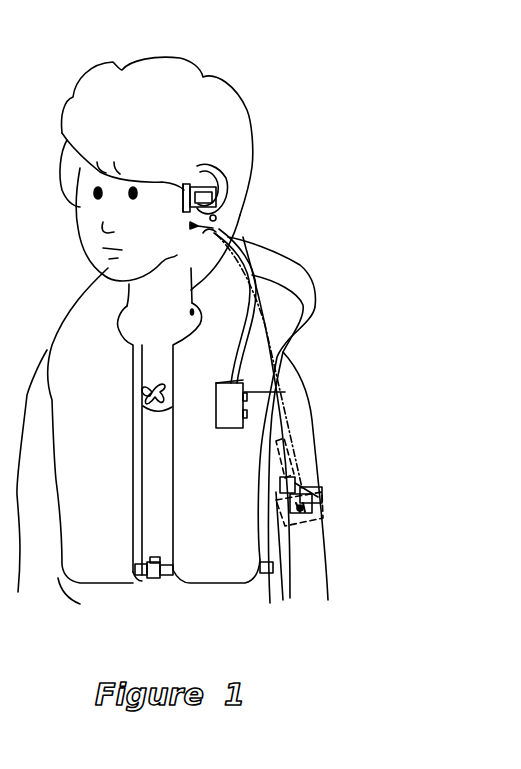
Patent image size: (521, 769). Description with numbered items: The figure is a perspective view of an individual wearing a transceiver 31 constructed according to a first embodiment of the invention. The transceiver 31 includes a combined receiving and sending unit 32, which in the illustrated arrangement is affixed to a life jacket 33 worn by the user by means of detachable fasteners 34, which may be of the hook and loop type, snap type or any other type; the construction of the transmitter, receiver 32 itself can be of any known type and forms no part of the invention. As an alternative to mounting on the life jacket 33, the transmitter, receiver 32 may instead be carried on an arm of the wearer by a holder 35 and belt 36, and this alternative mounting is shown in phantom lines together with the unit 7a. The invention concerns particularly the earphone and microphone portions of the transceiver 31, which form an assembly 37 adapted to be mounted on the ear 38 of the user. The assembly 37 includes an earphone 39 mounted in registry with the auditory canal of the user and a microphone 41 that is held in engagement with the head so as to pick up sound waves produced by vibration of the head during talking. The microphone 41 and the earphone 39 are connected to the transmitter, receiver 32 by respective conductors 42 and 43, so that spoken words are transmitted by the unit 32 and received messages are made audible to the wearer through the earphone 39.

The transceiver 31 is at (198, 140).
The earphone and microphone assembly 37 is at (170, 207).
The ear 38 is at (222, 186).
The earphone 39 is at (222, 199).
The microphone 41 is at (222, 232).
The conductor 42 is at (257, 278).
The conductor 43 is at (249, 300).
The combined receiving and sending unit 32 is at (231, 420).
The life jacket 33 is at (293, 308).
The detachable fasteners 34 is at (285, 392).
The transmitter unit 7a is at (276, 441).
The belt 36 is at (305, 498).
The holder 35 is at (305, 517).